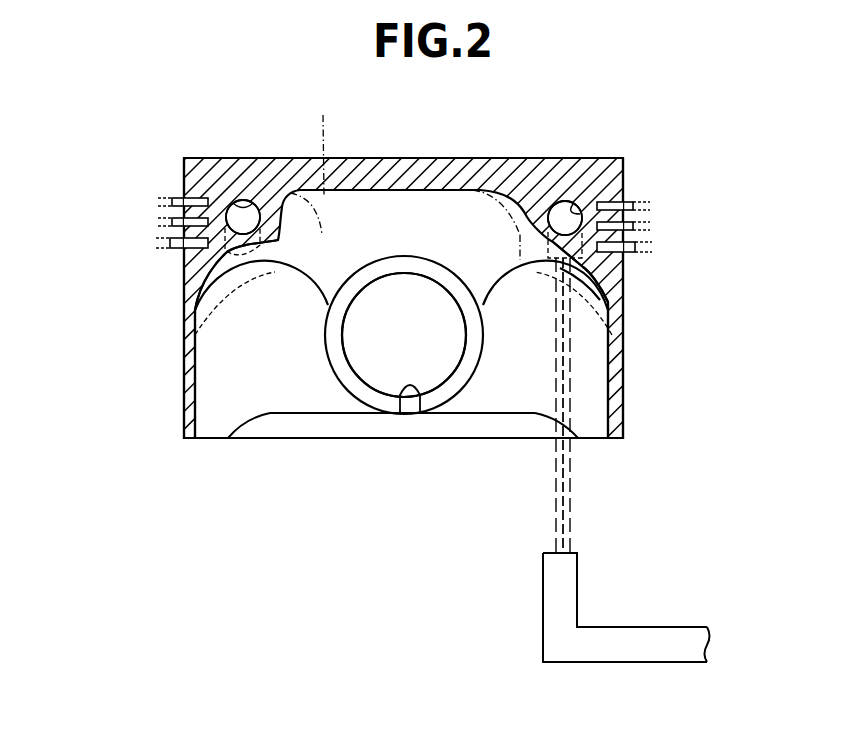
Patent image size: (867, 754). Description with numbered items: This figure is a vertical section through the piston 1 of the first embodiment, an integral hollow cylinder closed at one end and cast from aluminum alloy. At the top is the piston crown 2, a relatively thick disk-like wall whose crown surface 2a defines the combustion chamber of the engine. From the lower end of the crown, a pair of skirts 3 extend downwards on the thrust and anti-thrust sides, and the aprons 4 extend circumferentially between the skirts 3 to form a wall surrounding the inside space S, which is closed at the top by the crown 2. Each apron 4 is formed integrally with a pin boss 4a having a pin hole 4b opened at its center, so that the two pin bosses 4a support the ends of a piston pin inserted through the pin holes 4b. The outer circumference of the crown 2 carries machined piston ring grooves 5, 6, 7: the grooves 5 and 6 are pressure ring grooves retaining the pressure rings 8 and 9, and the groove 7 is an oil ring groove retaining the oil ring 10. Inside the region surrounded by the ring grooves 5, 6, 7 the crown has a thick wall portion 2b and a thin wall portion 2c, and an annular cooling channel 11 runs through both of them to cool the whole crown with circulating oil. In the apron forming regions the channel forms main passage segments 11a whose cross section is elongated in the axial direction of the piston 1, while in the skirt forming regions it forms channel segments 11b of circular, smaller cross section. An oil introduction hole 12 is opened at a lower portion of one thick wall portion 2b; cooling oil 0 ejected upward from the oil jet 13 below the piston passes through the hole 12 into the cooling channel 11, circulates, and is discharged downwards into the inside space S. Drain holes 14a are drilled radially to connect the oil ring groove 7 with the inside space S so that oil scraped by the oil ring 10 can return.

The piston 1 is at (624, 157).
The piston crown 2 is at (615, 172).
The crown surface 2a is at (505, 157).
The thick wall portion 2b is at (472, 195).
The thin wall portion 2c is at (522, 250).
The skirt 3 is at (180, 410).
The apron 4 is at (498, 393).
The pin boss 4a is at (372, 397).
The pin hole 4b is at (420, 395).
The piston ring groove 5 is at (172, 200).
The piston ring groove 6 is at (172, 222).
The oil ring groove 7 is at (172, 243).
The pressure ring 8 is at (633, 205).
The pressure ring 9 is at (633, 226).
The oil ring 10 is at (635, 247).
The cooling channel 11 is at (563, 205).
The main passage segment 11a is at (185, 265).
The channel segment 11b is at (240, 200).
The oil introduction hole 12 is at (585, 270).
The oil jet 13 is at (628, 627).
The drain hole 14a is at (185, 285).
The cooling oil 0 is at (568, 460).
The inside space S is at (255, 393).